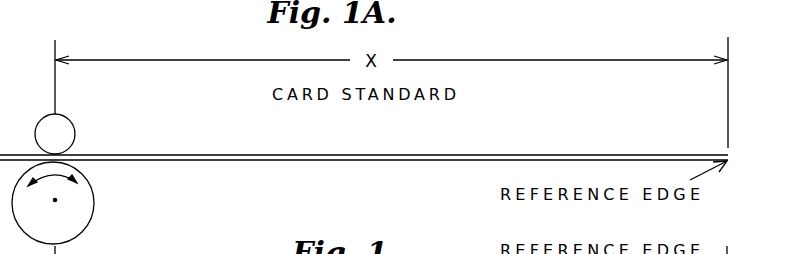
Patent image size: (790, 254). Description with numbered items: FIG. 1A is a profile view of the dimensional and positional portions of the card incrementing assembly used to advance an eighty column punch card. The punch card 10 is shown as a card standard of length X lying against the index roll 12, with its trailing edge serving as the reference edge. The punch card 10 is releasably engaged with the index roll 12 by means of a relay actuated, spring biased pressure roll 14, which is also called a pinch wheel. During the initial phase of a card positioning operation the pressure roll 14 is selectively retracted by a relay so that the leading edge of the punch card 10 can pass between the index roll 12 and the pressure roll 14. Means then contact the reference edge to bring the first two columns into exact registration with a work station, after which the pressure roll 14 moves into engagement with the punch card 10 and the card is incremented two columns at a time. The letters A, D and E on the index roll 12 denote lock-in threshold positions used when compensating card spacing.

The punch card 10 is at (390, 152).
The index roll 12 is at (94, 213).
The pressure roll 14 is at (73, 130).